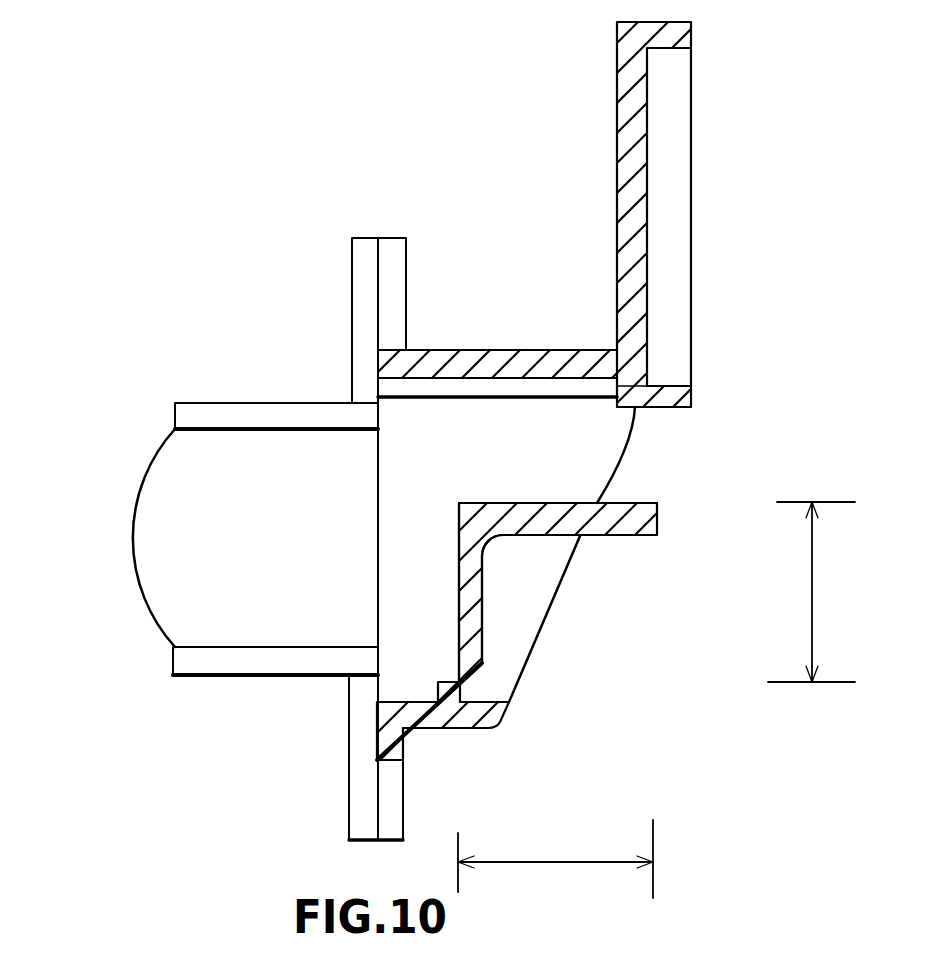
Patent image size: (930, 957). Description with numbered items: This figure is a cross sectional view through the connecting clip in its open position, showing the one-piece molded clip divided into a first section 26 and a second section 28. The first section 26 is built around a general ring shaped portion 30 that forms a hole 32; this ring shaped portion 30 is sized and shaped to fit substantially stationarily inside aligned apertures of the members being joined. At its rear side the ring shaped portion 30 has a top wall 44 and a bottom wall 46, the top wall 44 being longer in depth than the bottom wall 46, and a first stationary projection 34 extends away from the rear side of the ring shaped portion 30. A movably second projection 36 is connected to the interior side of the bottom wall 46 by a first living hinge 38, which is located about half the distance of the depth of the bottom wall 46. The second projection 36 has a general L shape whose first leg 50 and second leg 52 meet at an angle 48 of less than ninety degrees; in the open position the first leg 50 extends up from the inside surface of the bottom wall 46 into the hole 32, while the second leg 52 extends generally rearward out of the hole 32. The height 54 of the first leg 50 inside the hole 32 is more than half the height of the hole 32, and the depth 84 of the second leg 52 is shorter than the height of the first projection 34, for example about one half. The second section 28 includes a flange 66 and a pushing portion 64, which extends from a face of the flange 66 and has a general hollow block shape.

The first section 26 is at (691, 389).
The second section 28 is at (187, 403).
The general ring shaped portion 30 is at (550, 617).
The hole 32 is at (585, 457).
The first stationary projection 34 is at (693, 117).
The movably second projection 36 is at (657, 518).
The first living hinge 38 is at (462, 682).
The top wall 44 is at (507, 350).
The bottom wall 46 is at (455, 728).
The angle 48 is at (490, 593).
The first leg 50 is at (457, 592).
The second leg 52 is at (660, 503).
The height 54 is at (812, 597).
The pushing portion 64 is at (133, 535).
The flange 66 is at (354, 280).
The depth 84 is at (545, 862).